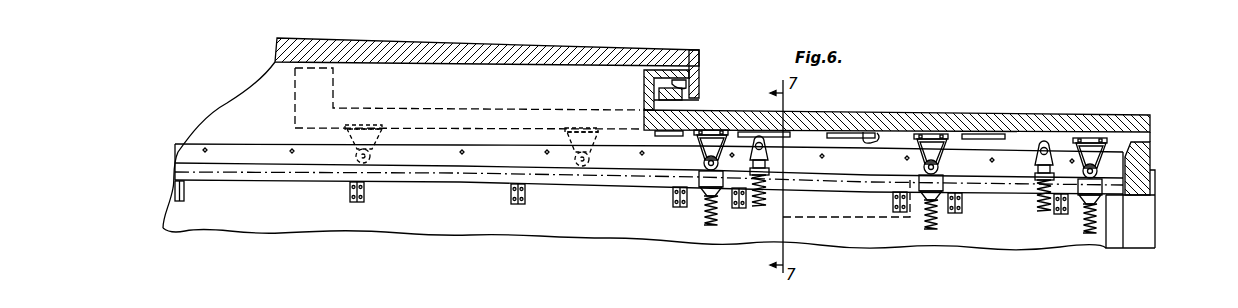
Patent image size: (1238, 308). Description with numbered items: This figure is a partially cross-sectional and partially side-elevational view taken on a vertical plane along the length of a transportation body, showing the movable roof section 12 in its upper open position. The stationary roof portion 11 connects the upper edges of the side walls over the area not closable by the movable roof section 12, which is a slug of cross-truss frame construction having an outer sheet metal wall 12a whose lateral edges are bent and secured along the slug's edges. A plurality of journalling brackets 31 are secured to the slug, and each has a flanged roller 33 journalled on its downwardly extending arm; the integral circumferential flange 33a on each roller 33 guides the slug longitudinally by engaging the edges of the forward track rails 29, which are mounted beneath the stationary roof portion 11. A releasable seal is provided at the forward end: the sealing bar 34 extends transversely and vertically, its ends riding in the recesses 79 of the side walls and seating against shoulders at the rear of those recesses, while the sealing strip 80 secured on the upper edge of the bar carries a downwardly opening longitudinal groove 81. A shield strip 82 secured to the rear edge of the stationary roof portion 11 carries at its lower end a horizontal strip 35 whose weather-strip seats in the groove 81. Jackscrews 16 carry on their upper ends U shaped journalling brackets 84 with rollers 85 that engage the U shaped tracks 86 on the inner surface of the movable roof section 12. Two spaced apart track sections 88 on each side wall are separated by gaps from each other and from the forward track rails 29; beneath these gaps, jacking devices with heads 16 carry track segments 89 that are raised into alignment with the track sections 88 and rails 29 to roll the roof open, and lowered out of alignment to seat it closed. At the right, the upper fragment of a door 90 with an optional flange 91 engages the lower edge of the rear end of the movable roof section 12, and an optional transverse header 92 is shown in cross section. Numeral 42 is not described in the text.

The stationary roof portion 11 is at (518, 44).
The movable roof section 12 is at (465, 110).
The outer sheet metal wall 12a is at (584, 227).
The jackscrews 16 is at (703, 208).
The forward track rails 29 is at (483, 181).
The journalling brackets 31 is at (382, 135).
The flanged roller 33 is at (942, 158).
The circumferential flange 33a is at (943, 167).
The sealing bar 34 is at (295, 103).
The horizontal strip 35 is at (699, 101).
The element 42 is at (456, 300).
The recesses 79 is at (645, 50).
The sealing strip 80 is at (701, 72).
The longitudinal groove 81 is at (688, 92).
The shield strip 82 is at (692, 70).
The U shaped journalling brackets 84 is at (770, 157).
The rollers 85 is at (1018, 133).
The U shaped tracks 86 is at (870, 135).
The track sections 88 is at (836, 187).
The track segments 89 is at (726, 188).
The doors 90 is at (1150, 212).
The flange 91 is at (1156, 180).
The header 92 is at (1151, 153).